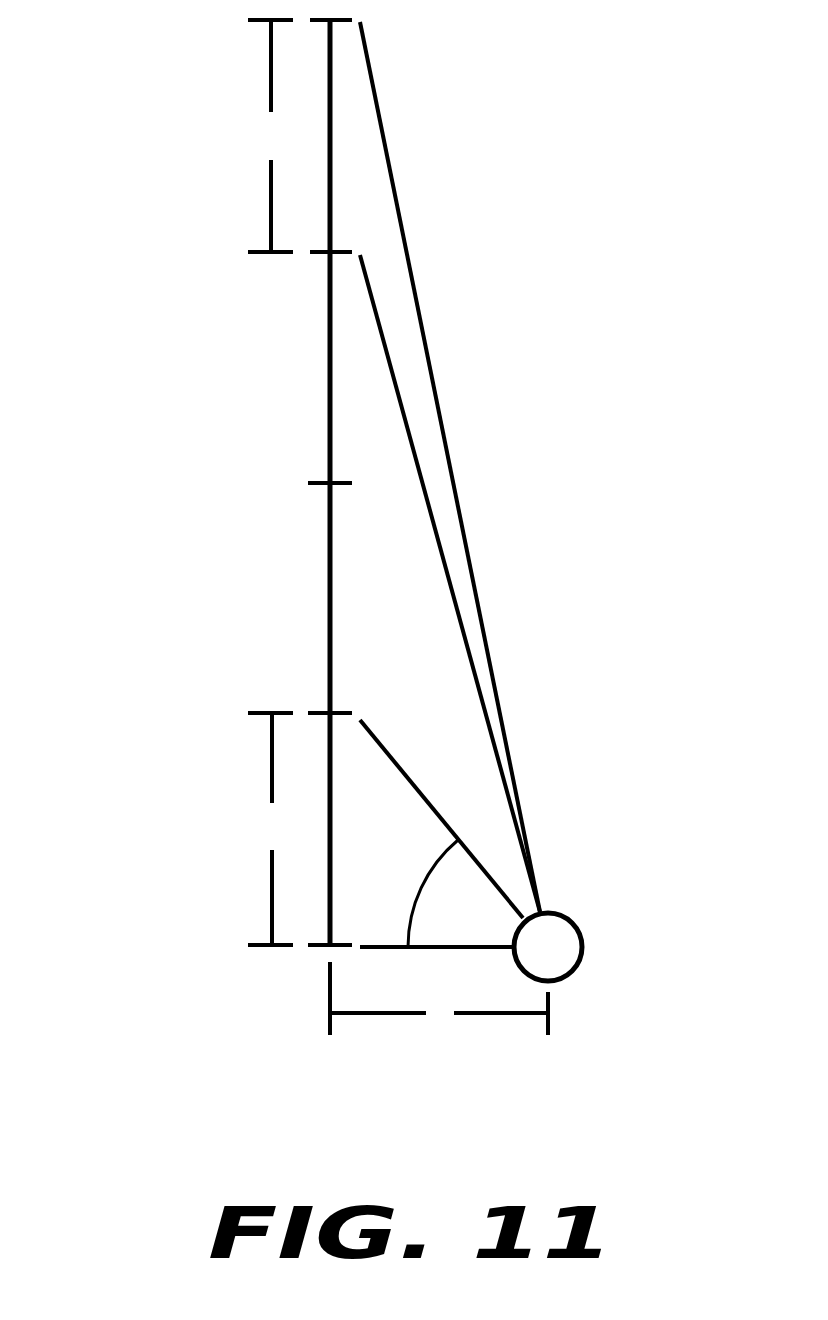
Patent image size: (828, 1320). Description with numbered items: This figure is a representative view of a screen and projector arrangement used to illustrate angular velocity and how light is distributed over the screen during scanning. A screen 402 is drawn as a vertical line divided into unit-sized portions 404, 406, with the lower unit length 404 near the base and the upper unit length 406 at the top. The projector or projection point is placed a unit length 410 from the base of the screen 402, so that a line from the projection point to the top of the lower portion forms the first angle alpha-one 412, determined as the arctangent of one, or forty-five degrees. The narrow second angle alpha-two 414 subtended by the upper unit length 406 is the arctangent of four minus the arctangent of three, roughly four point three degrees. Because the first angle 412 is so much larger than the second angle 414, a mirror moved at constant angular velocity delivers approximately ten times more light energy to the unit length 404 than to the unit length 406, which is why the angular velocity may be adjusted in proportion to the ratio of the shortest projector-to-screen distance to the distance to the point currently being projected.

The screen 402 is at (330, 595).
The unit-sized portion 404 is at (271, 896).
The unit-sized portion 406 is at (270, 200).
The unit length 410 is at (381, 1013).
The angle α1 412 is at (440, 860).
The angle α2 414 is at (543, 783).